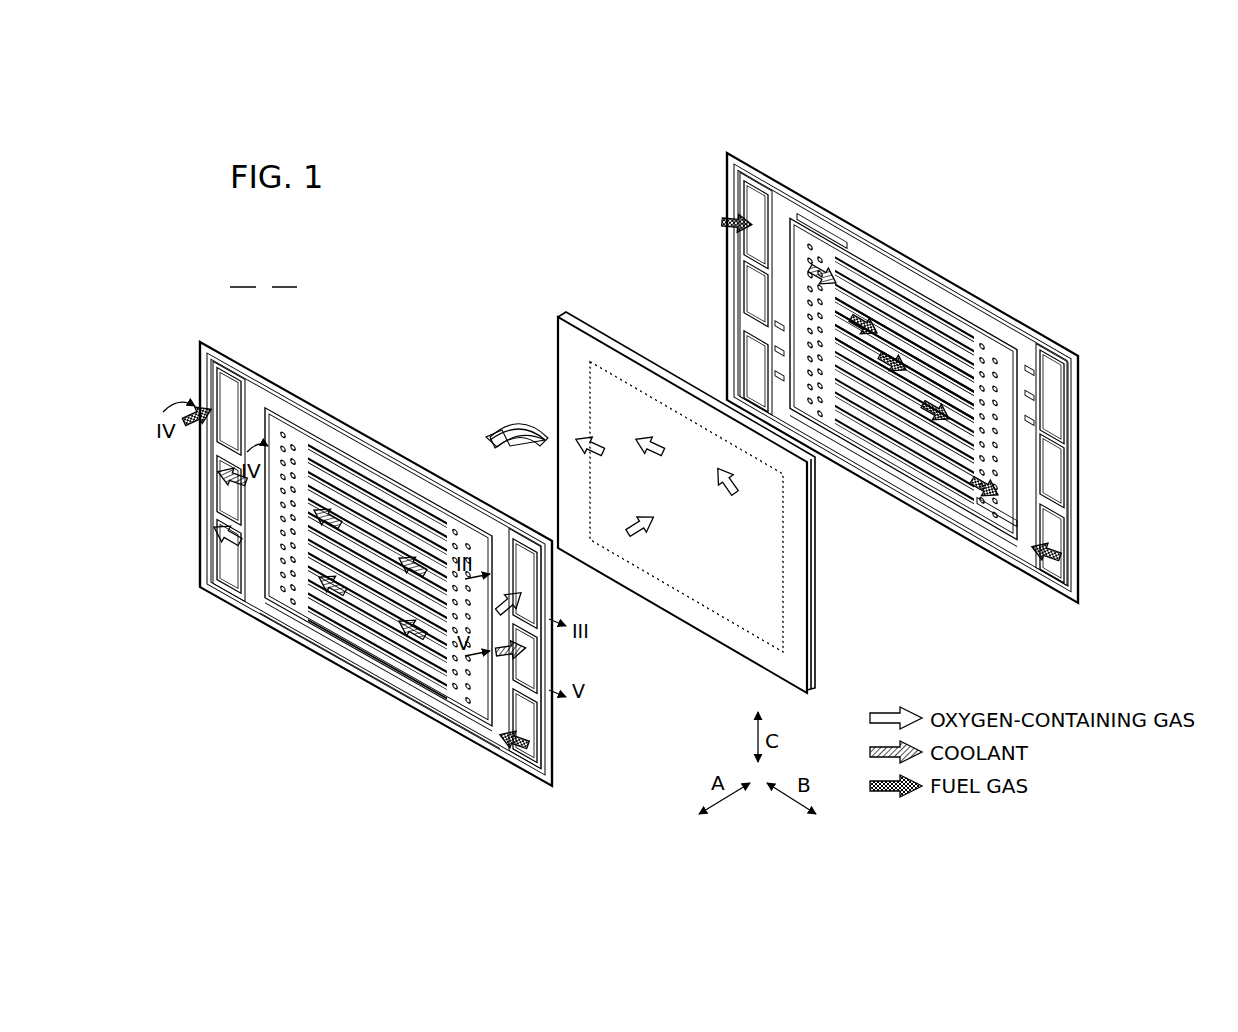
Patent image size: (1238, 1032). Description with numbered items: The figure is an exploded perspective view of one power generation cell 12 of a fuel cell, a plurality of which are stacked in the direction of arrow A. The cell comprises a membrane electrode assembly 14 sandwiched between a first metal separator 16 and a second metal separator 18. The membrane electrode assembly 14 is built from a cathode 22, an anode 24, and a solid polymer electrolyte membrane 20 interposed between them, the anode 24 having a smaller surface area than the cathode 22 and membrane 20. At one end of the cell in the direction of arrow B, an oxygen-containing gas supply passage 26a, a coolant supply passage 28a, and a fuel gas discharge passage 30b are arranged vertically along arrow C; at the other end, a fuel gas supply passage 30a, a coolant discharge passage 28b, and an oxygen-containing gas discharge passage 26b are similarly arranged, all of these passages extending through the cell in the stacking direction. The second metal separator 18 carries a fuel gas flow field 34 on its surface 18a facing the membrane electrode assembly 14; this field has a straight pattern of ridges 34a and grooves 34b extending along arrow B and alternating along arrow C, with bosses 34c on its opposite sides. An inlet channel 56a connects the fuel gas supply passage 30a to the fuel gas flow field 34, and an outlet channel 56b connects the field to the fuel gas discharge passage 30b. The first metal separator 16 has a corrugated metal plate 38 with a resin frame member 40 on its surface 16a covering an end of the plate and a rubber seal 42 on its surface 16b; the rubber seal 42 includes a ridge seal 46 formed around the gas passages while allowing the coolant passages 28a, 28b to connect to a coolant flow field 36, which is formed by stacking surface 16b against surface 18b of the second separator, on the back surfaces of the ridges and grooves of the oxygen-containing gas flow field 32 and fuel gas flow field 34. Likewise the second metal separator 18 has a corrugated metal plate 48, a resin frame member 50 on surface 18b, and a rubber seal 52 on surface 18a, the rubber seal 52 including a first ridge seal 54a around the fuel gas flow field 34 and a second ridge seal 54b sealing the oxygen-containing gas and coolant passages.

The power generation cell 12 is at (268, 276).
The membrane electrode assembly 14 is at (556, 318).
The first metal separator 16 is at (200, 341).
The surface 16a is at (478, 748).
The surface 16b is at (446, 727).
The second metal separator 18 is at (726, 153).
The surface 18a is at (973, 532).
The surface 18b is at (1006, 560).
The solid polymer electrolyte membrane 20 is at (818, 612).
The cathode 22 is at (734, 598).
The anode 24 is at (632, 386).
The oxygen-containing gas supply passage 26a is at (527, 605).
The oxygen-containing gas discharge passage 26b is at (225, 530).
The coolant supply passage 28a is at (528, 655).
The coolant discharge passage 28b is at (225, 465).
The fuel gas supply passage 30a is at (228, 386).
The fuel gas discharge passage 30b is at (528, 722).
The oxygen-containing gas flow field 32 is at (402, 478).
The fuel gas flow field 34 is at (1004, 330).
The ridges 34a is at (862, 290).
The grooves 34b is at (920, 323).
The bosses 34c is at (822, 268).
The coolant flow field 36 is at (325, 600).
The corrugated metal plate 38 is at (383, 653).
The resin frame member 40 is at (467, 489).
The rubber seal 42 is at (276, 652).
The ridge seal 46 is at (360, 418).
The corrugated metal plate 48 is at (938, 490).
The resin frame member 50 is at (1083, 480).
The rubber seal 52 is at (1083, 455).
The first ridge seal 54a is at (948, 326).
The second ridge seal 54b is at (975, 341).
The inlet channel 56a is at (766, 230).
The outlet channel 56b is at (1030, 523).